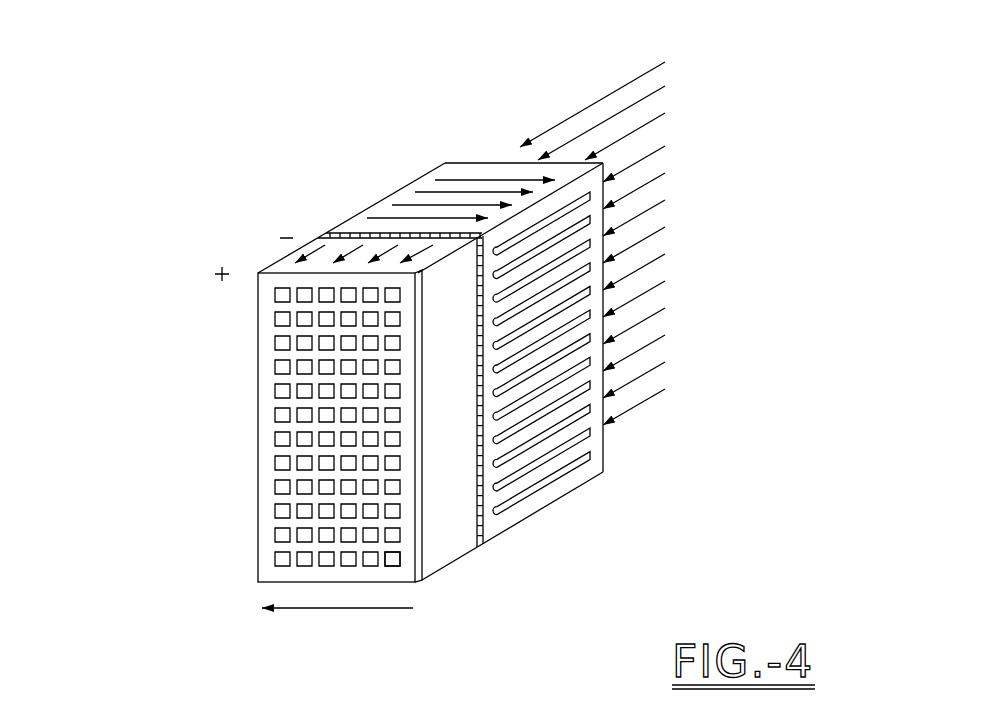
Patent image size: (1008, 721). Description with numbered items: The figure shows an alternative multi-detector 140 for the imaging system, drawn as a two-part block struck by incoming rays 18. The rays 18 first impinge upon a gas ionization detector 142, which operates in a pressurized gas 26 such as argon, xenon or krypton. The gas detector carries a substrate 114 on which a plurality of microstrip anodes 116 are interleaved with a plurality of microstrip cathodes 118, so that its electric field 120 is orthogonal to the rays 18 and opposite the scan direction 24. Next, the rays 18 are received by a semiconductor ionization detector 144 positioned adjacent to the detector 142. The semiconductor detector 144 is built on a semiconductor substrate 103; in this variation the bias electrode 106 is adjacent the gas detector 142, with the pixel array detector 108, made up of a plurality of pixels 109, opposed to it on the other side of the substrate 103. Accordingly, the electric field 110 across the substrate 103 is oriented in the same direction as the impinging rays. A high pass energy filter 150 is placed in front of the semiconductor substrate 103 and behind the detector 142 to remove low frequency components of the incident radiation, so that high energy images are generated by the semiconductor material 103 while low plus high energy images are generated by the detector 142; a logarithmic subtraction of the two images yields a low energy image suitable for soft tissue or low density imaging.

The multi-detector 140 is at (213, 158).
The pressurized gas 26 is at (407, 203).
The gas ionization detector 142 is at (380, 202).
The bias electrode 106 is at (347, 233).
The electric field 110 is at (277, 253).
The semiconductor ionization detector 144 is at (258, 335).
The semiconductor substrate 103 is at (263, 460).
The pixel array detector 108 is at (277, 517).
The pixel 109 is at (392, 560).
The scan direction 24 is at (347, 608).
The high pass energy filter 150 is at (480, 545).
The substrate 114 is at (540, 495).
The microstrip anode 116 is at (585, 447).
The microstrip cathode 118 is at (577, 462).
The electric field 120 is at (477, 180).
The rays 18 is at (592, 105).